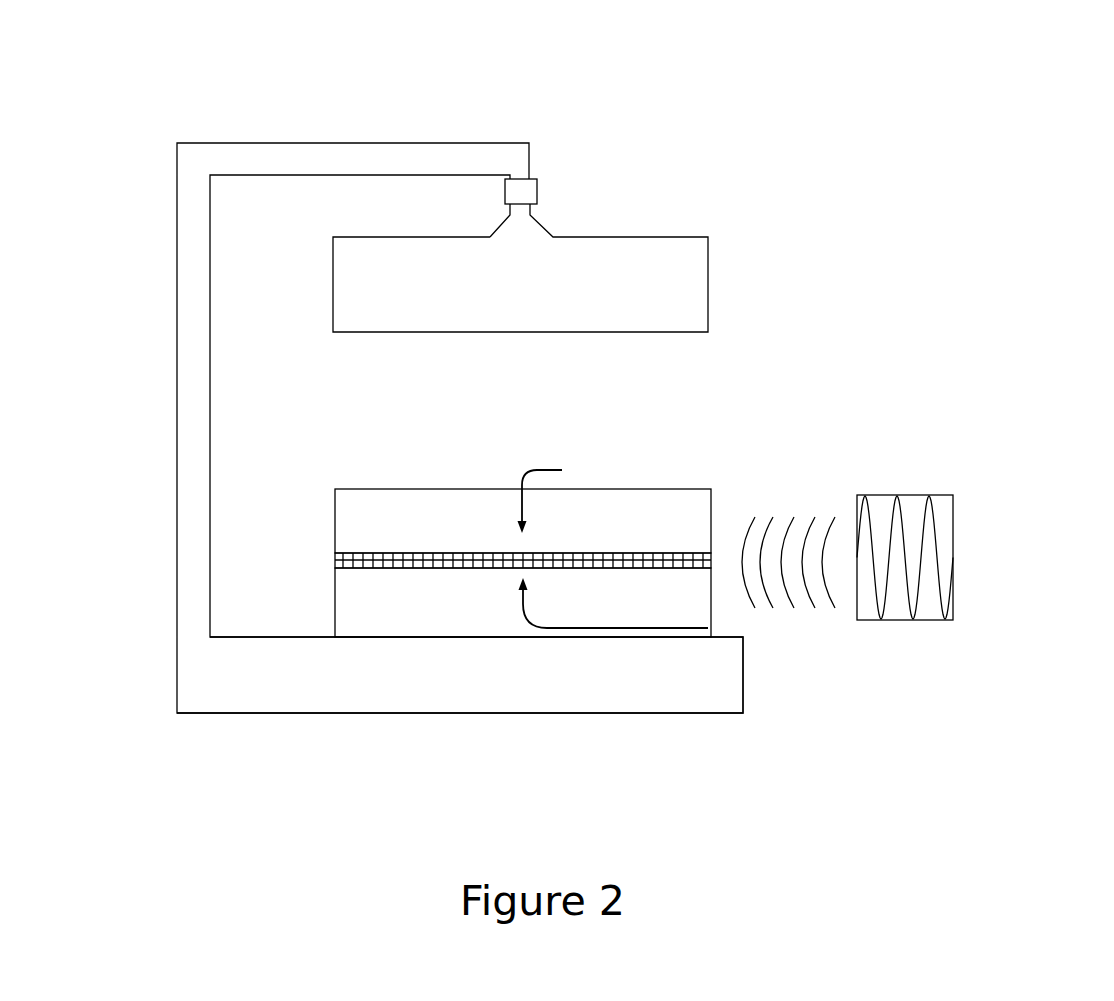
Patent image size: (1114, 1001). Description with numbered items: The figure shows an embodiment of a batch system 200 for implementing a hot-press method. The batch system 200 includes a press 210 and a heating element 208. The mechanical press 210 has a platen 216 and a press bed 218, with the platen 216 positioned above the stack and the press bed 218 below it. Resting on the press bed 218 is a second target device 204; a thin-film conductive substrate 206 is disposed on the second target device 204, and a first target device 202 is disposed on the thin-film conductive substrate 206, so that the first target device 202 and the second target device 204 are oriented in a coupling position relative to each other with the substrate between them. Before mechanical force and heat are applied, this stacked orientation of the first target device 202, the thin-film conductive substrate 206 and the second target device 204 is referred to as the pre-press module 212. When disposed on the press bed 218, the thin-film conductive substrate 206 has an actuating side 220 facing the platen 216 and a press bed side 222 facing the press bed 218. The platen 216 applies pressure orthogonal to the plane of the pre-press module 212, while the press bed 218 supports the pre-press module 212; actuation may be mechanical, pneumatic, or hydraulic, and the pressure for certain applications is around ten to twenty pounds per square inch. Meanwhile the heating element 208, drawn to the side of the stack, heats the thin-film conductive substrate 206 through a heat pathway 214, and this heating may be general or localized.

The batch system 200 is at (1021, 102).
The first target device 202 is at (335, 523).
The second target device 204 is at (335, 600).
The thin-film conductive substrate 206 is at (335, 560).
The heating element 208 is at (905, 495).
The press 210 is at (118, 288).
The pre-press module 212 is at (740, 444).
The heat pathway 214 is at (788, 508).
The platen 216 is at (520, 255).
The press bed 218 is at (460, 675).
The actuating side 220 is at (565, 496).
The press bed side 222 is at (633, 607).